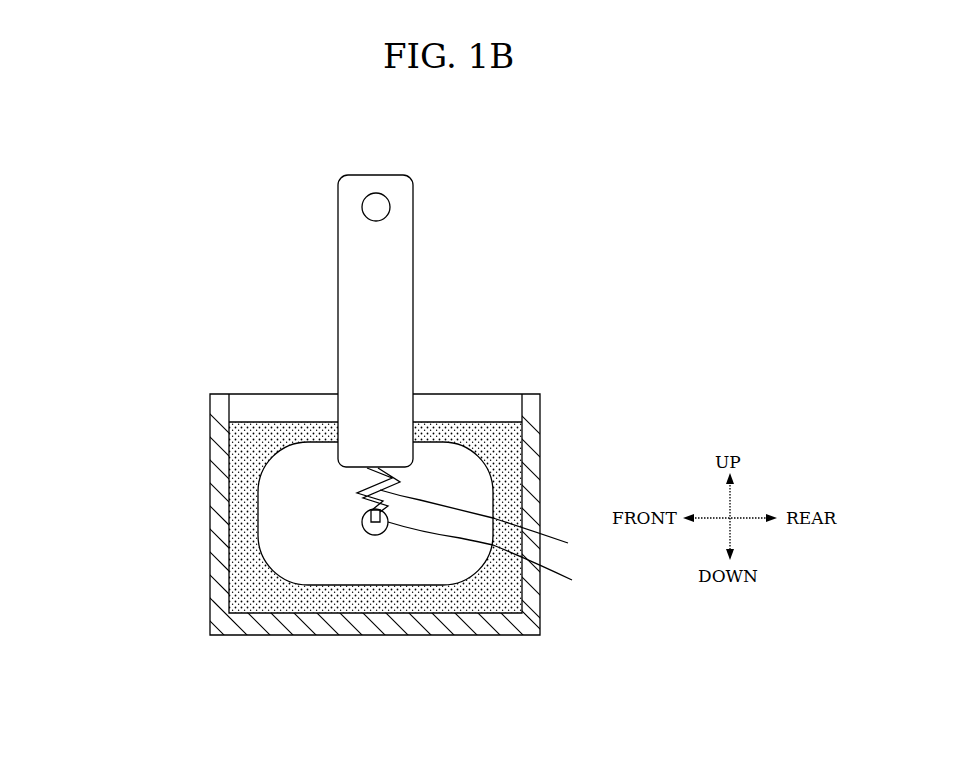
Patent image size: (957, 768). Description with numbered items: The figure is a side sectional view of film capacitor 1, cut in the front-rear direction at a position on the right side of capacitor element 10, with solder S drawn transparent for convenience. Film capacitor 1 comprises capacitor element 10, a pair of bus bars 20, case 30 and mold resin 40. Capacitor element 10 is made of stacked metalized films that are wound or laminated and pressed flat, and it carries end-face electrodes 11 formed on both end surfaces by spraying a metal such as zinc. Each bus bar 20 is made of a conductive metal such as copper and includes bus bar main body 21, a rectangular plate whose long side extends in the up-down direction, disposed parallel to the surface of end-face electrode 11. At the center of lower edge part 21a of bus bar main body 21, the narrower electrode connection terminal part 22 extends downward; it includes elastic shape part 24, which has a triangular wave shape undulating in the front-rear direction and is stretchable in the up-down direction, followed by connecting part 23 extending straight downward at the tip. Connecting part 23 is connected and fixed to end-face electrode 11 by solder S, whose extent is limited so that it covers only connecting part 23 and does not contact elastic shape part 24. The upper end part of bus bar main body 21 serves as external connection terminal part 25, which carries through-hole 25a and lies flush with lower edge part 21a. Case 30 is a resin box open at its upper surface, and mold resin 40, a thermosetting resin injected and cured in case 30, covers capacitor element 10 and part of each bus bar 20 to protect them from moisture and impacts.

The film capacitor 1 is at (248, 231).
The capacitor element 10 is at (380, 506).
The end-face electrode 11 is at (467, 467).
The bus bar 20 is at (458, 369).
The bus bar main body 21 is at (376, 357).
The lower edge part 21a is at (356, 470).
The electrode connection terminal part 22 is at (503, 548).
The connecting part 23 is at (594, 540).
The elastic shape part 24 is at (483, 527).
The external connection terminal part 25 is at (376, 176).
The through-hole 25a is at (360, 202).
The case 30 is at (541, 484).
The mold resin 40 is at (453, 422).
The solder S is at (371, 533).